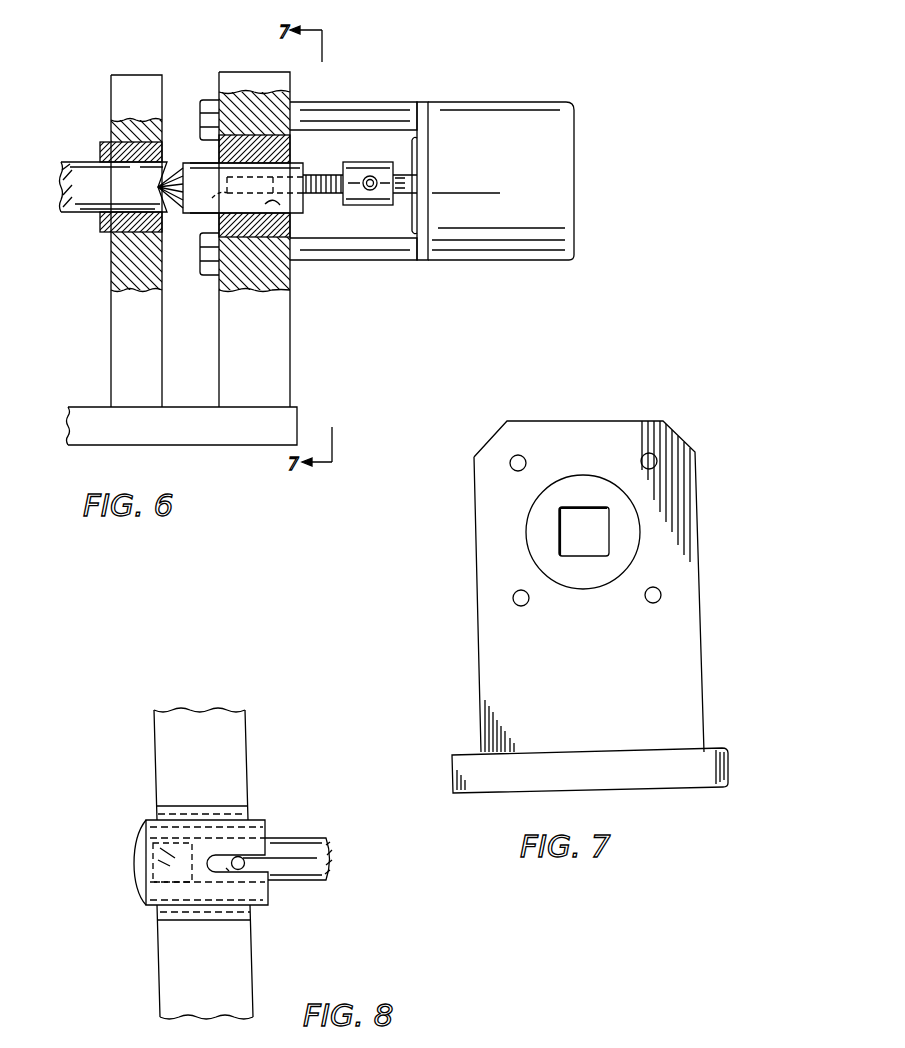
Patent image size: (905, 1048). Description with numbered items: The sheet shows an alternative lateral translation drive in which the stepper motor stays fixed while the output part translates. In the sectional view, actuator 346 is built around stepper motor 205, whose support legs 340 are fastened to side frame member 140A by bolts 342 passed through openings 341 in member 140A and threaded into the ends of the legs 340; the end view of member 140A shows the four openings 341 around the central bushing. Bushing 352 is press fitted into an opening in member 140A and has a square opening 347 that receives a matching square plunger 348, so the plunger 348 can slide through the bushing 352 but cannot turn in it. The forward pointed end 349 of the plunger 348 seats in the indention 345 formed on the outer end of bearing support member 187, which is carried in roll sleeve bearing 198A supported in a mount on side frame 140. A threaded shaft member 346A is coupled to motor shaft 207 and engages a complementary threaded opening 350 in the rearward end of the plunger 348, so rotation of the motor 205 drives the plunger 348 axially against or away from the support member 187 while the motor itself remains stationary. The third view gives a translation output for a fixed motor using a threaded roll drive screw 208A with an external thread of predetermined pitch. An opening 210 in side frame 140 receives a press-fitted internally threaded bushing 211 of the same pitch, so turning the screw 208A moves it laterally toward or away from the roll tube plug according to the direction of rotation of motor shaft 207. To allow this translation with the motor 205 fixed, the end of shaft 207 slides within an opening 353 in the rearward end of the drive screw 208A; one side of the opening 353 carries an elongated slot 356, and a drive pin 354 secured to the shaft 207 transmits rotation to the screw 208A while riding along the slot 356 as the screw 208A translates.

In FIG. 6, the side frame 140 is at (118, 355).
In FIG. 8, the side frame 140 is at (238, 750).
In FIG. 6, the side frame member 140A is at (292, 348).
In FIG. 7, the side frame member 140A is at (480, 612).
In FIG. 6, the bearing support member 187 is at (80, 173).
In FIG. 6, the roll sleeve bearing 198A is at (97, 236).
In FIG. 6, the stepper motor 205 is at (500, 103).
In FIG. 6, the motor shaft 207 is at (405, 175).
In FIG. 8, the motor shaft 207 is at (308, 838).
In FIG. 8, the threaded roll drive screw 208A is at (134, 882).
In FIG. 8, the opening 210 is at (188, 812).
In FIG. 8, the internally threaded bushing 211 is at (243, 810).
In FIG. 6, the support legs 340 is at (386, 104).
In FIG. 7, the openings 341 is at (640, 461).
In FIG. 6, the bolts 342 is at (207, 100).
In FIG. 6, the indention 345 is at (184, 186).
In FIG. 6, the actuator 346 is at (368, 300).
In FIG. 6, the threaded shaft member 346A is at (336, 196).
In FIG. 6, the square opening 347 is at (281, 206).
In FIG. 7, the square opening 347 is at (560, 522).
In FIG. 6, the plunger 348 is at (192, 158).
In FIG. 6, the forward pointed end 349 is at (157, 187).
In FIG. 6, the threaded opening 350 is at (212, 198).
In FIG. 6, the bushing 352 is at (288, 152).
In FIG. 7, the bushing 352 is at (581, 575).
In FIG. 8, the opening 353 is at (157, 860).
In FIG. 8, the drive pin 354 is at (246, 866).
In FIG. 8, the elongated slot 356 is at (232, 870).